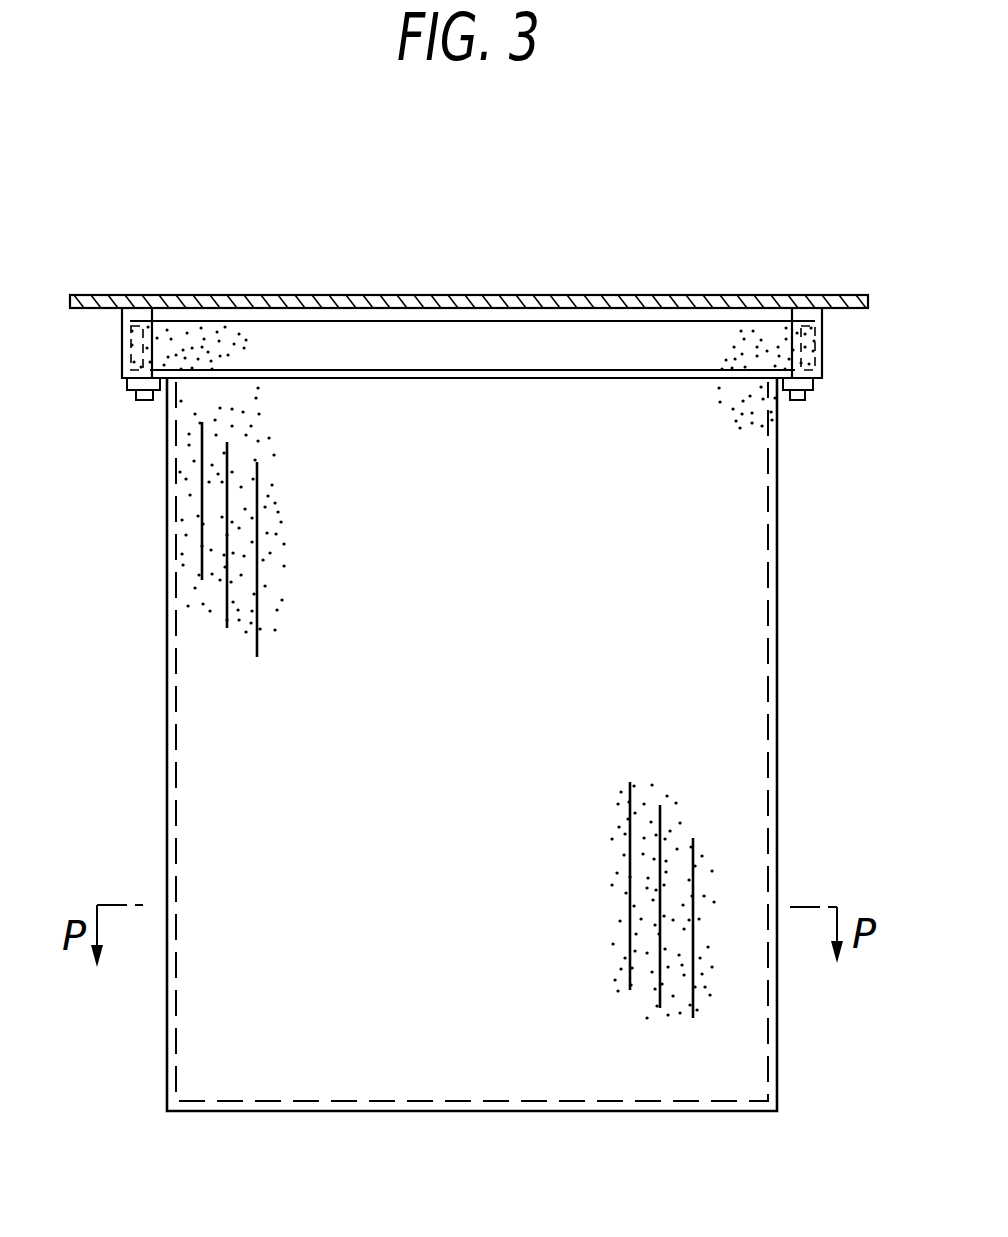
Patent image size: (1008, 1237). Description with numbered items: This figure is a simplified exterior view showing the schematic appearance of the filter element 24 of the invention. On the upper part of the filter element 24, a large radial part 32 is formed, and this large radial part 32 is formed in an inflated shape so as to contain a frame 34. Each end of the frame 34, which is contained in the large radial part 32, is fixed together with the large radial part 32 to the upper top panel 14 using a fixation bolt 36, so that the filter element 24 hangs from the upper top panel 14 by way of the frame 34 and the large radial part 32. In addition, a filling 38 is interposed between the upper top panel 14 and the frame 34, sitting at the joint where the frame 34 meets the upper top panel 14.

The upper top panel 14 is at (318, 295).
The filter element 24 is at (777, 757).
The large radial part 32 is at (823, 342).
The frame 34 is at (522, 343).
The fixation bolt 36 is at (143, 402).
The filling 38 is at (660, 295).